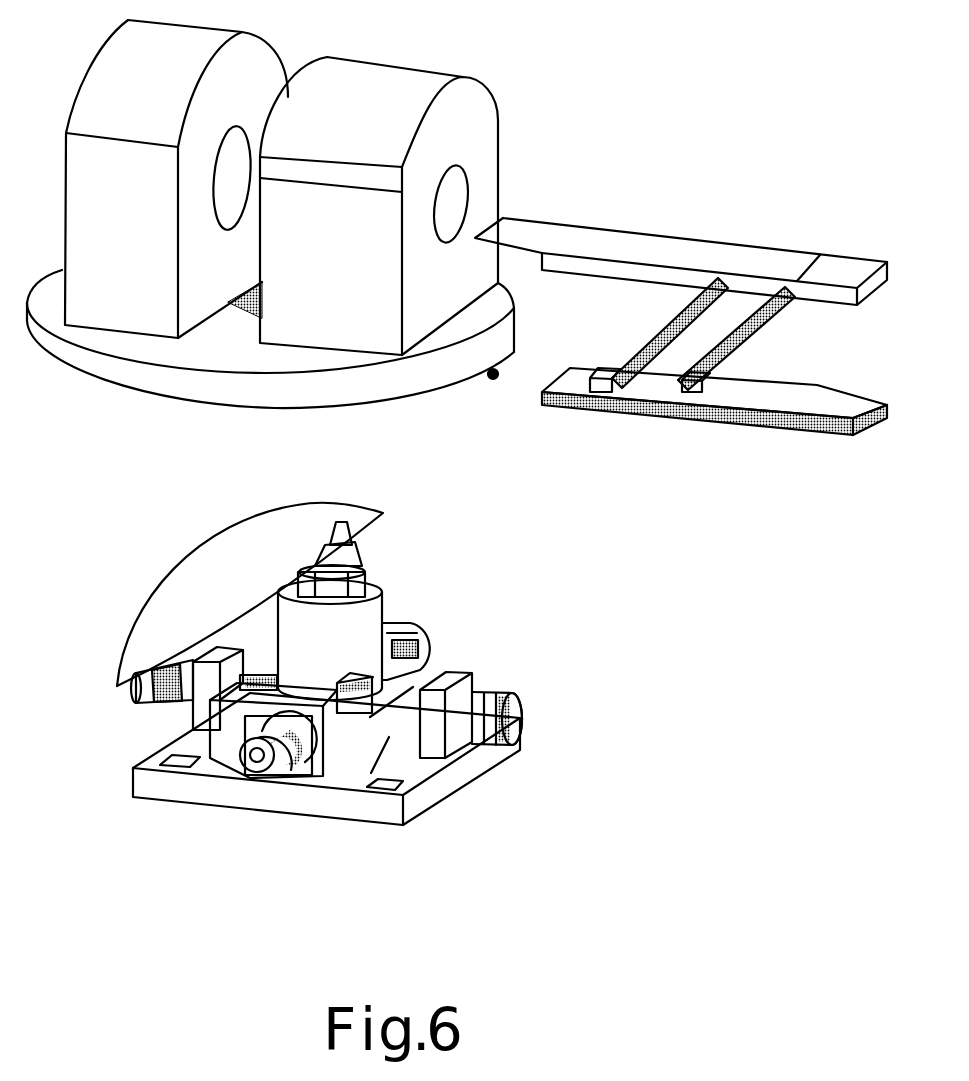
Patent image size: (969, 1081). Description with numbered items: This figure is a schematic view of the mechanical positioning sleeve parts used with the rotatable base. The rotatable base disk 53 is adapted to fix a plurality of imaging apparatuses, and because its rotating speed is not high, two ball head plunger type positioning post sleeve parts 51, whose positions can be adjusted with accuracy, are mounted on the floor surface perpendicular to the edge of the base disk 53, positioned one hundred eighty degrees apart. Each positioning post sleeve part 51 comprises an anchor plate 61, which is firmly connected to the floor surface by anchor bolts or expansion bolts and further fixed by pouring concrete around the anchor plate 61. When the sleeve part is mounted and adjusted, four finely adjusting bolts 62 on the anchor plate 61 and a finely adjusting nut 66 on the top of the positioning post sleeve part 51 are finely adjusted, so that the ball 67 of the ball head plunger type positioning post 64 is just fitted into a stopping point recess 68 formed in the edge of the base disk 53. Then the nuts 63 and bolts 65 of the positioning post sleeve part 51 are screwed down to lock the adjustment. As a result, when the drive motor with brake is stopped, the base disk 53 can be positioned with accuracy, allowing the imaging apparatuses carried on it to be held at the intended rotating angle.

The ball head plunger type positioning post sleeve part 51 is at (497, 378).
The base disk 53 is at (263, 542).
The anchor plate 61 is at (150, 788).
The finely adjusting bolt 62 is at (245, 778).
The nut 63 is at (305, 787).
The ball head plunger type positioning post 64 is at (401, 797).
The bolt 65 is at (433, 662).
The finely adjusting nut 66 is at (382, 588).
The ball 67 is at (362, 547).
The stopping point recess 68 is at (348, 524).